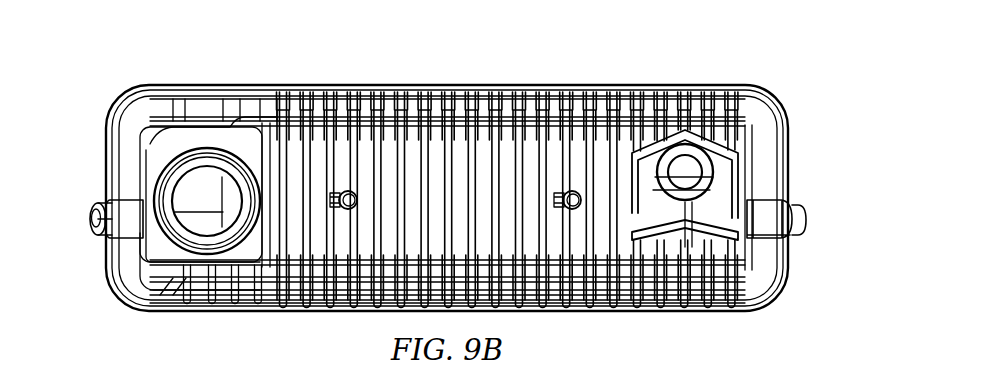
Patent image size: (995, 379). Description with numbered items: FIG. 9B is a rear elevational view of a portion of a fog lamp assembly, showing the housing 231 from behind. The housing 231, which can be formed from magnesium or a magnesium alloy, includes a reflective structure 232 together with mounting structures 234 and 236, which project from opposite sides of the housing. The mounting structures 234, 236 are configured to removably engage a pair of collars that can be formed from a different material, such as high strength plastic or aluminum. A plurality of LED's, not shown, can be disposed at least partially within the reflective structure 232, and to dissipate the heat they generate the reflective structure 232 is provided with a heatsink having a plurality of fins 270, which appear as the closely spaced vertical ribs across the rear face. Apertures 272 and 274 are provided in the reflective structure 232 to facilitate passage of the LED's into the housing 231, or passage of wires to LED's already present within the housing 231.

The housing 231 is at (806, 165).
The reflective structure 232 is at (697, 88).
The mounting structure 234 is at (806, 220).
The mounting structure 236 is at (98, 236).
The fins 270 is at (613, 100).
The aperture 272 is at (190, 183).
The aperture 274 is at (700, 162).